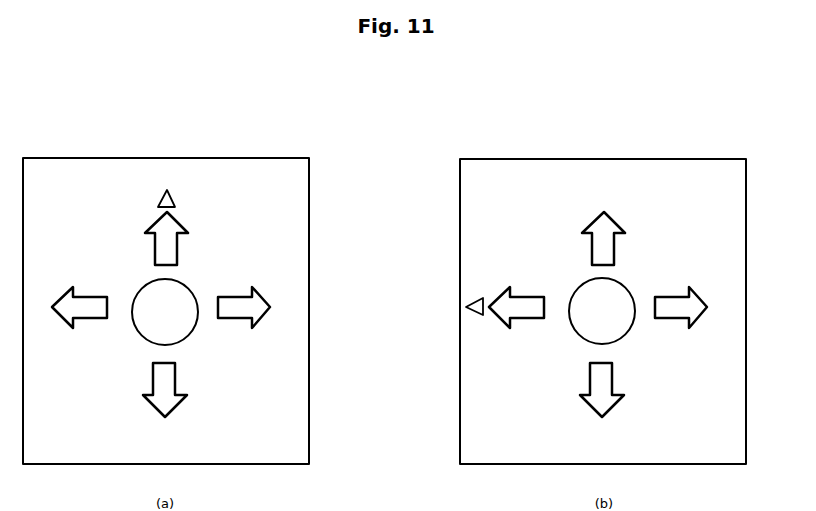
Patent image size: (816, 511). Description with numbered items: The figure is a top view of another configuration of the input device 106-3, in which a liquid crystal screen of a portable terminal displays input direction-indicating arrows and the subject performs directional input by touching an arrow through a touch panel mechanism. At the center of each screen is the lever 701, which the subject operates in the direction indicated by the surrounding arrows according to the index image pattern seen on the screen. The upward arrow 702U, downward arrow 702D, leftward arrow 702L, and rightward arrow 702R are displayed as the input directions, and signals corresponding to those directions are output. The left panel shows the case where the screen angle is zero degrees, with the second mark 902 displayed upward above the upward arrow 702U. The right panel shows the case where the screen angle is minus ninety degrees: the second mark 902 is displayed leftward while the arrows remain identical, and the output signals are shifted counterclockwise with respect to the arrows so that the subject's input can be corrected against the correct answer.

The input device 106-3 is at (437, 143).
The lever 701 is at (183, 298).
The upward arrow 702U is at (147, 233).
The downward arrow 702D is at (157, 400).
The leftward arrow 702L is at (92, 312).
The rightward arrow 702R is at (234, 312).
The second mark 902 is at (160, 196).